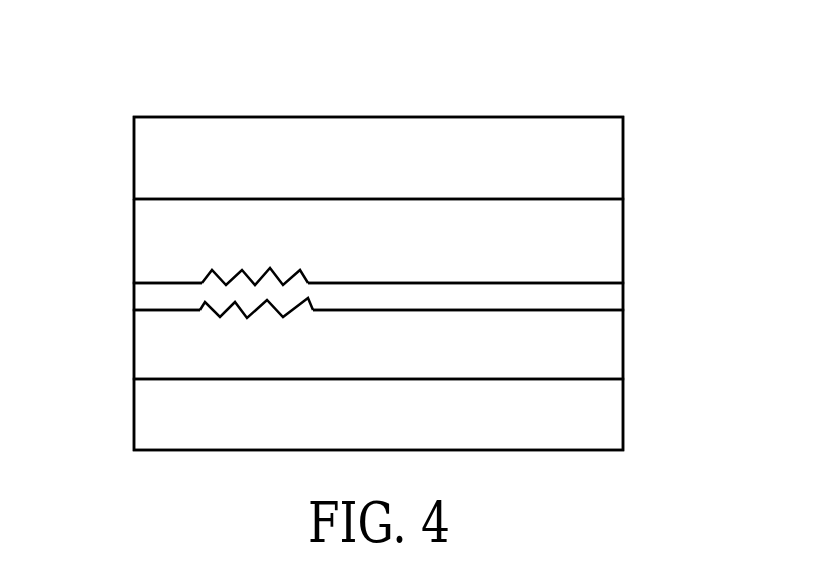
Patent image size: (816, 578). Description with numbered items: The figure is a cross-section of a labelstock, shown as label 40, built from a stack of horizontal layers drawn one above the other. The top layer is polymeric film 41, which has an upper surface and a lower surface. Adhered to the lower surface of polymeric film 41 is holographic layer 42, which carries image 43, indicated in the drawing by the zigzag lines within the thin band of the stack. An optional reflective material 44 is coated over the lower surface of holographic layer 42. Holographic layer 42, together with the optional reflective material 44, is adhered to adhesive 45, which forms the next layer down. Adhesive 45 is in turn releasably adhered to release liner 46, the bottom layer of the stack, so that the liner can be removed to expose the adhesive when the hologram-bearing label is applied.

The label 40 is at (566, 84).
The polymeric film 41 is at (602, 162).
The holographic layer 42 is at (602, 235).
The image 43 is at (262, 292).
The reflective material 44 is at (607, 293).
The adhesive 45 is at (606, 337).
The release liner 46 is at (606, 422).